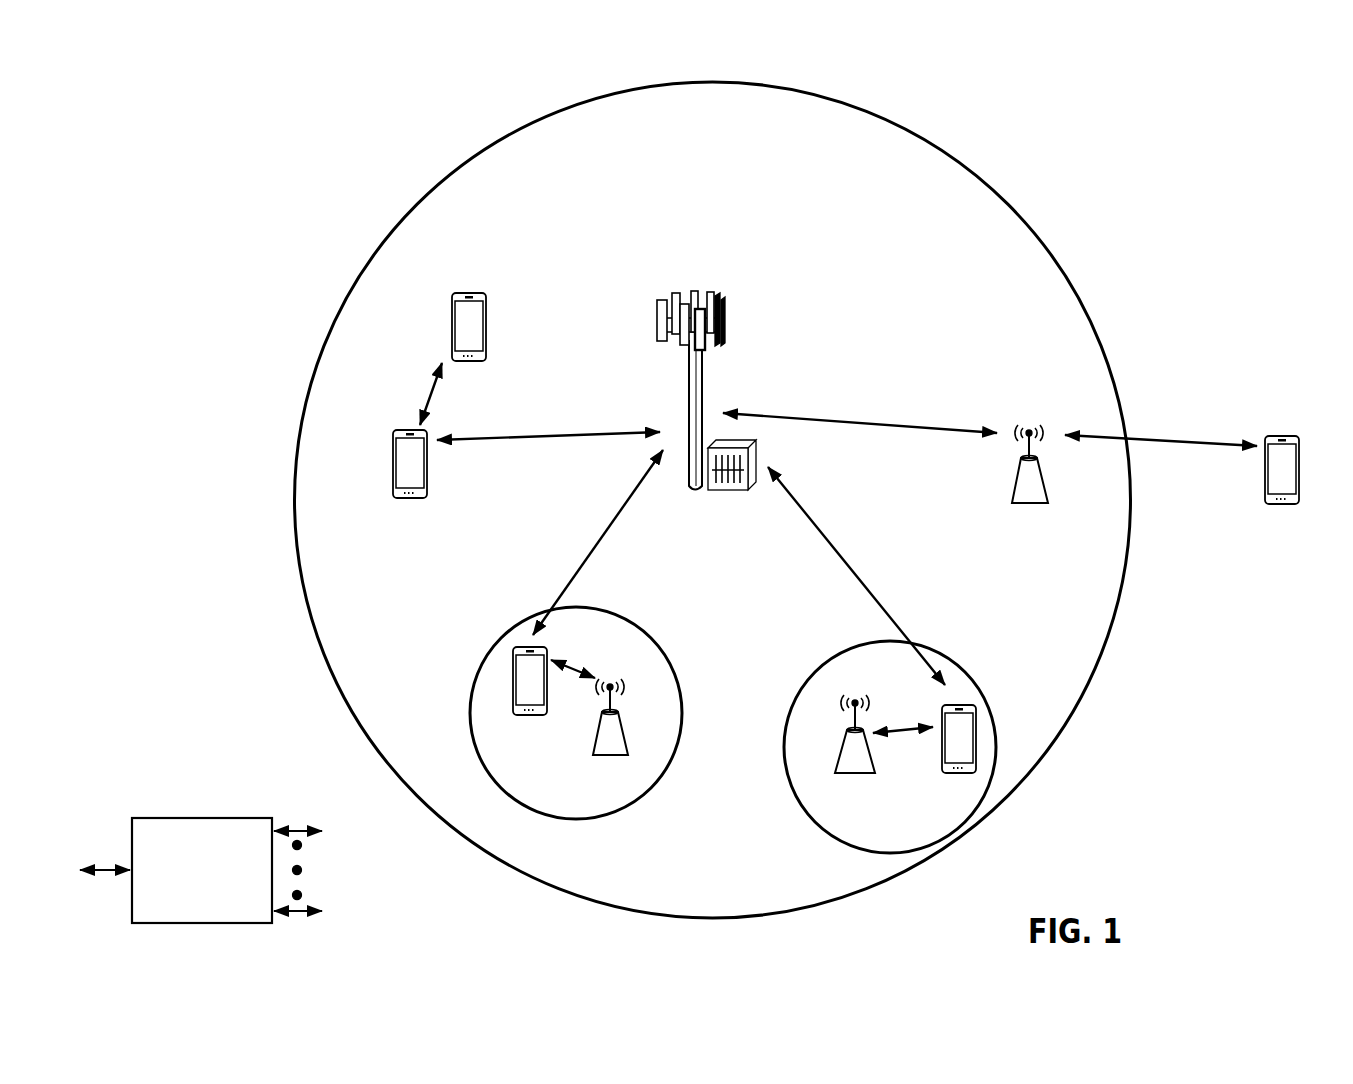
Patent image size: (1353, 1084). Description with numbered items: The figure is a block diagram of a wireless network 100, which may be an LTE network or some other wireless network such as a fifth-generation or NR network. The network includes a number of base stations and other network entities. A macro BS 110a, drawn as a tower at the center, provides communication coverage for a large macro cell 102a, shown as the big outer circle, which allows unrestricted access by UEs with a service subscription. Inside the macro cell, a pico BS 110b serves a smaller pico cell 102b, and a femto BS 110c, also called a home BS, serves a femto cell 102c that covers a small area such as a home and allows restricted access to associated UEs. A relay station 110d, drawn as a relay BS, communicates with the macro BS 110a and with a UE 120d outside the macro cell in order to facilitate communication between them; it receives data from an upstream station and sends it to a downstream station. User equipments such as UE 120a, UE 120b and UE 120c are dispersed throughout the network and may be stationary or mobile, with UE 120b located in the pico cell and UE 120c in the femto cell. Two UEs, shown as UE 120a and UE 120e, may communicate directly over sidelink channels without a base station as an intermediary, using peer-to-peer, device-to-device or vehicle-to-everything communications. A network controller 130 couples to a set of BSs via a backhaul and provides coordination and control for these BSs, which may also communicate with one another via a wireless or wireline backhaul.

The wireless network 100 is at (180, 77).
The macro cell 102a is at (993, 191).
The pico cell 102b is at (661, 650).
The femto cell 102c is at (826, 662).
The macro BS 110a is at (700, 286).
The pico BS 110b is at (628, 744).
The femto BS 110c is at (838, 763).
The relay station 110d is at (1029, 425).
The UE 120a is at (393, 466).
The UE 120b is at (515, 715).
The UE 120c is at (944, 775).
The UE 120d is at (1292, 436).
The UE 120e is at (452, 316).
The network controller 130 is at (200, 817).